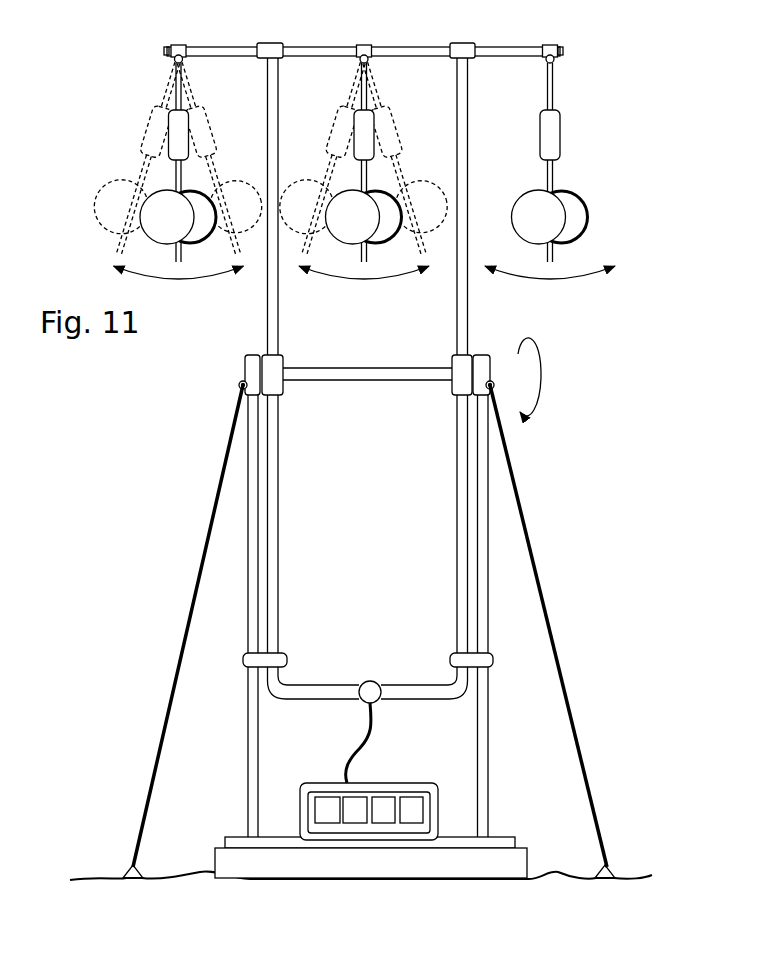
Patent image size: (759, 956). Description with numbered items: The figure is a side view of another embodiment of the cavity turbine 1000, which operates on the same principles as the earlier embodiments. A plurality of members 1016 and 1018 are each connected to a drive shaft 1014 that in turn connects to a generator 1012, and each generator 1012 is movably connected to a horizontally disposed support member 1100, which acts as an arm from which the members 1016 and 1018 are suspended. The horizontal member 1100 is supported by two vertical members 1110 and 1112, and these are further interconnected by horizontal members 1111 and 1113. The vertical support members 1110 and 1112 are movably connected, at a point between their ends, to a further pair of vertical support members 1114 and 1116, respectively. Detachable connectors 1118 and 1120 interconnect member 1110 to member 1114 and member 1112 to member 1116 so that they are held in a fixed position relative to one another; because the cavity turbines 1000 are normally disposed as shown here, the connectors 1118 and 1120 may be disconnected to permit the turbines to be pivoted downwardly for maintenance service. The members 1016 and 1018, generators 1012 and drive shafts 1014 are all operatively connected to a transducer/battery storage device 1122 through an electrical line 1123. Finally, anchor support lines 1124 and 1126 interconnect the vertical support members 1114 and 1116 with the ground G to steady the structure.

The cavity turbine 1000 is at (607, 135).
The horizontally disposed support member 1100 is at (320, 56).
The generator 1012 is at (562, 137).
The drive shaft 1014 is at (557, 177).
The member 1016 is at (573, 220).
The member 1018 is at (528, 227).
The vertical support member 1110 is at (273, 307).
The horizontal member 1111 is at (370, 380).
The vertical support member 1112 is at (466, 308).
The horizontal member 1113 is at (403, 702).
The vertical support member 1114 is at (247, 523).
The vertical support member 1116 is at (488, 518).
The detachable connector 1118 is at (243, 658).
The detachable connector 1120 is at (493, 658).
The transducer/battery storage device 1122 is at (410, 820).
The electrical line 1123 is at (363, 735).
The anchor support line 1124 is at (196, 590).
The anchor support line 1126 is at (550, 603).
The ground G is at (192, 873).